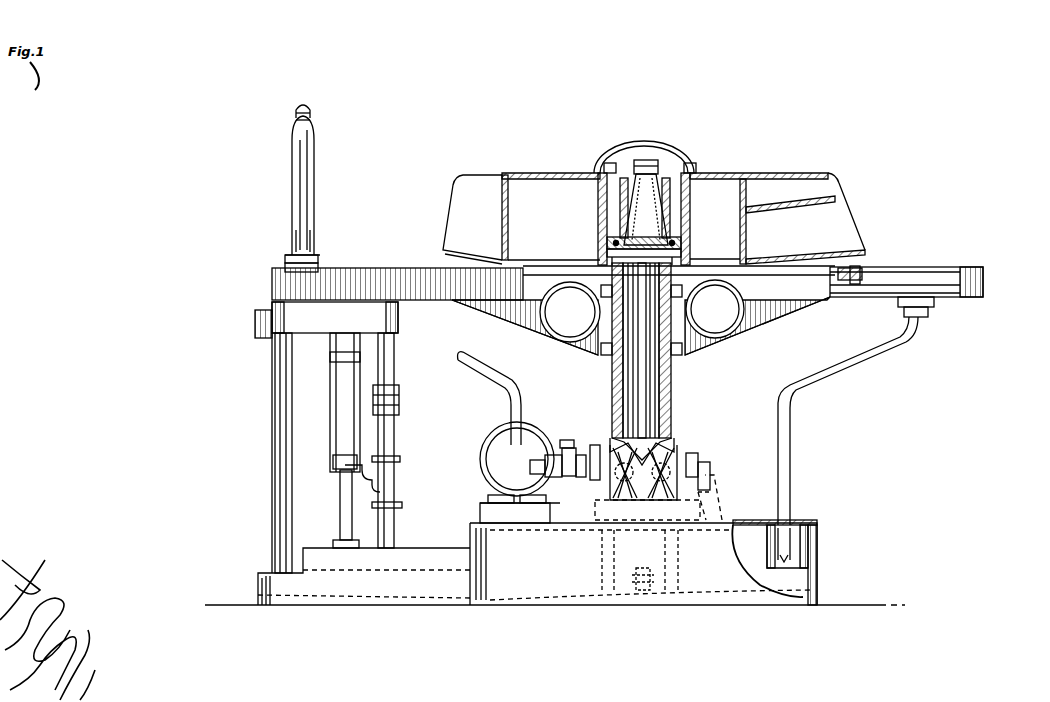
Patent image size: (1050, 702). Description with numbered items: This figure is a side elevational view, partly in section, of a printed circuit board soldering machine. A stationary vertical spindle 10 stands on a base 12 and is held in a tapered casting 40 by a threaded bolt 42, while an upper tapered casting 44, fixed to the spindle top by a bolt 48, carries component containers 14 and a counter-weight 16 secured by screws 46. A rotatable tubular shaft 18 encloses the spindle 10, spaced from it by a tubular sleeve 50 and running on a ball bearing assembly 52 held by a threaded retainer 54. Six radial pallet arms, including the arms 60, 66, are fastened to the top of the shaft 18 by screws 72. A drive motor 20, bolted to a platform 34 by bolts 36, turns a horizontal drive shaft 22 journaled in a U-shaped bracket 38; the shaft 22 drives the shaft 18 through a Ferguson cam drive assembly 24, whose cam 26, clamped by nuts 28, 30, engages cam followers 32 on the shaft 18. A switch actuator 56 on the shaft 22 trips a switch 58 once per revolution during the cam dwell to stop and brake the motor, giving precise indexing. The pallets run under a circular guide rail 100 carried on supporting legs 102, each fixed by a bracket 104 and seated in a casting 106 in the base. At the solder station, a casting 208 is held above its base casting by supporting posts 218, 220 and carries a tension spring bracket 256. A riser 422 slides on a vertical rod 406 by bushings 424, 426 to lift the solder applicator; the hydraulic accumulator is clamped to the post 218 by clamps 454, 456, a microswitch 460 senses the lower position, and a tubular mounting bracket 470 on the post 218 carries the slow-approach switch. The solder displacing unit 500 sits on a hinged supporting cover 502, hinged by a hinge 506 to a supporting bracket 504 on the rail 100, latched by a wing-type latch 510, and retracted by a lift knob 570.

The stationary vertical spindle 10 is at (646, 413).
The base 12 is at (500, 588).
The containers 14 is at (835, 213).
The counter-weight 16 is at (480, 178).
The rotatable tubular shaft 18 is at (672, 386).
The drive motor 20 is at (522, 430).
The horizontal drive shaft 22 is at (558, 445).
The Ferguson three-dimensional cam drive assembly 24 is at (680, 440).
The cam 26 is at (675, 436).
The nut 28 is at (706, 472).
The nut 30 is at (606, 450).
The cam followers 32 is at (712, 478).
The platform 34 is at (480, 508).
The bolts 36 is at (490, 492).
The U-shaped bracket 38 is at (708, 494).
The tapered casting 40 is at (672, 590).
The threaded bolt 42 is at (652, 580).
The tapered casting 44 is at (660, 170).
The screws 46 is at (595, 186).
The bolt 48 is at (645, 165).
The tubular sleeve 50 is at (603, 252).
The ball bearing assembly 52 is at (681, 220).
The retainer 54 is at (612, 230).
The switch actuator 56 is at (580, 480).
The switch 58 is at (572, 438).
The pallet arm 60 is at (752, 312).
The pallet arm 66 is at (865, 272).
The screws 72 is at (592, 300).
The circular guide rail 100 is at (270, 284).
The supporting legs 102 is at (792, 430).
The bracket 104 is at (928, 320).
The casting 106 is at (800, 565).
The casting 208 is at (285, 318).
The supporting post 218 is at (395, 356).
The supporting post 220 is at (275, 482).
The tension spring bracket 256 is at (258, 323).
The vertical rod 406 is at (340, 508).
The riser 422 is at (328, 415).
The bushing 424 is at (333, 462).
The bushing 426 is at (335, 358).
The clamp 454 is at (402, 502).
The clamp 456 is at (400, 456).
The microswitch 460 is at (350, 476).
The tubular mounting bracket 470 is at (400, 406).
The solder displacing unit 500 is at (303, 210).
The hinged supporting cover 502 is at (320, 256).
The supporting bracket 504 is at (320, 266).
The hinge 506 is at (288, 255).
The wing-type latch 510 is at (312, 240).
The lift knob 570 is at (312, 122).